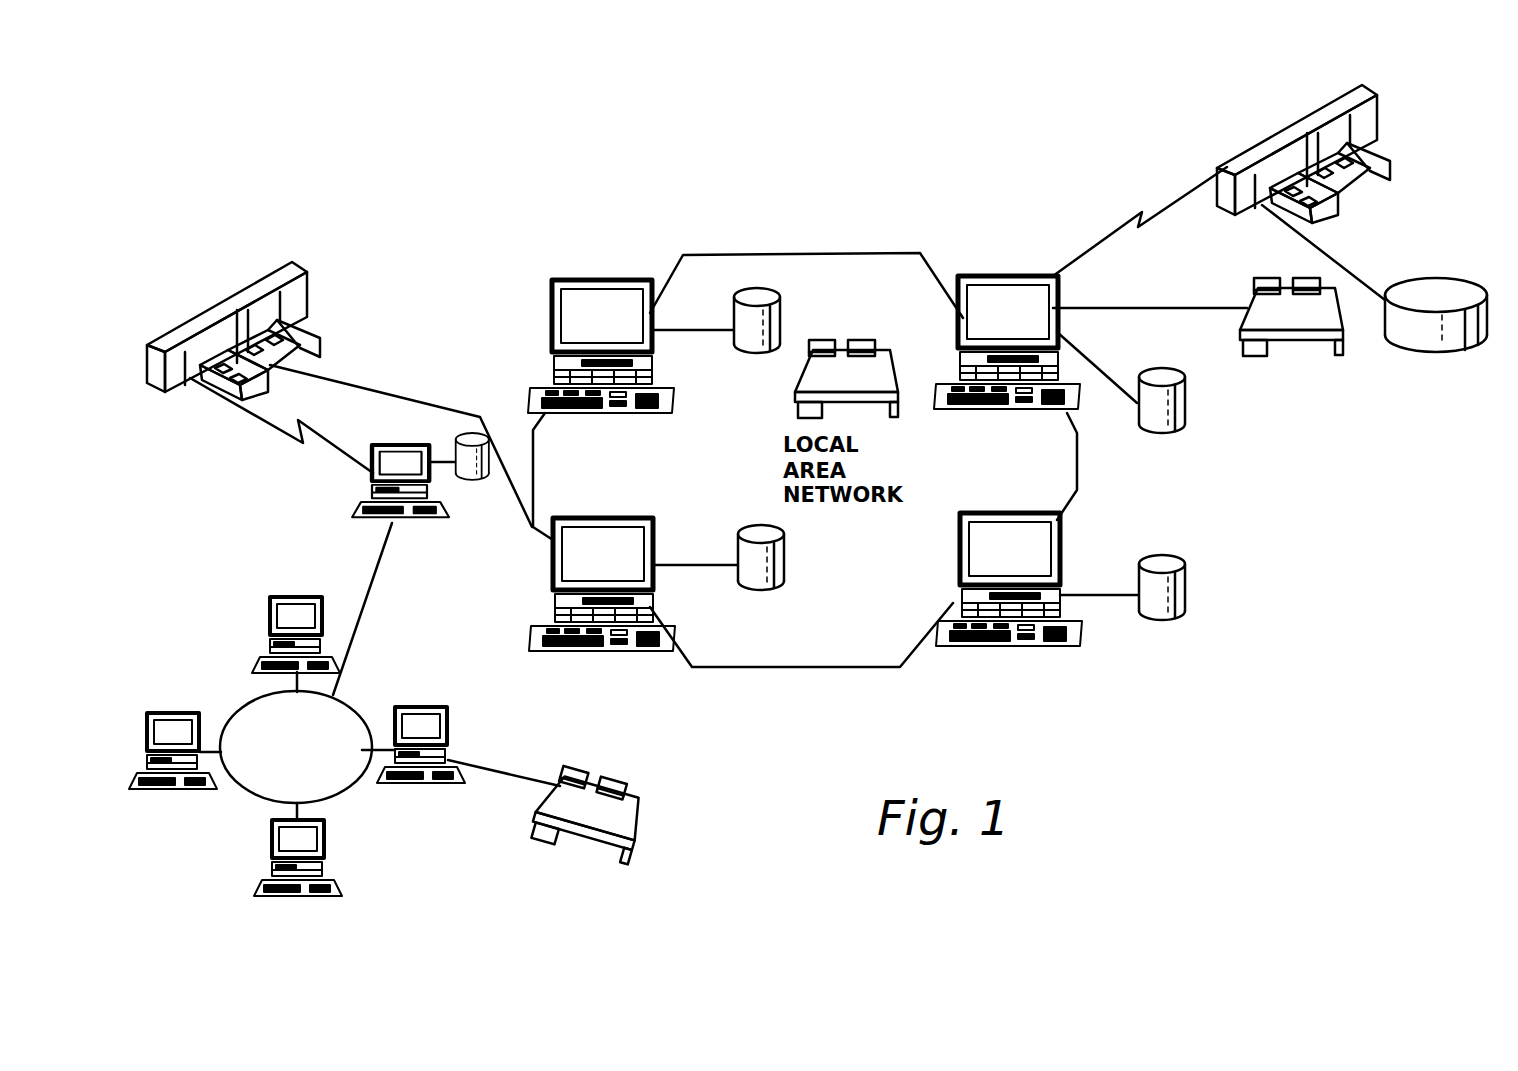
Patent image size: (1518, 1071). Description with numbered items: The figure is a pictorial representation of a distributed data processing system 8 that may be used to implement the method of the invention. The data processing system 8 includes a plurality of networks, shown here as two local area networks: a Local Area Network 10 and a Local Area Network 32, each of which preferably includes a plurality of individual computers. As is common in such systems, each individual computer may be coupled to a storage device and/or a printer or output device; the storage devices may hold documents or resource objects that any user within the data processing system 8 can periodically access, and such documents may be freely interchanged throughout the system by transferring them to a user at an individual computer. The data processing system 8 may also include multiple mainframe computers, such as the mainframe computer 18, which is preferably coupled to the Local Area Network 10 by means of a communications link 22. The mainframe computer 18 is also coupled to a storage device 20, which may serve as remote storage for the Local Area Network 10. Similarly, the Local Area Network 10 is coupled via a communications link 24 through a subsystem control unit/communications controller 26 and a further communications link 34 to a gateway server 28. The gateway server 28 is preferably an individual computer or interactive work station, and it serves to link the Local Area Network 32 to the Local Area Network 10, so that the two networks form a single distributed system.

The data processing system 8 is at (834, 210).
The Local Area Network 10 is at (831, 668).
The mainframe computer 18 is at (1298, 122).
The storage device 20 is at (1455, 290).
The communications link 22 is at (1175, 203).
The communications link 24 is at (405, 390).
The subsystem control unit/communications controller 26 is at (305, 270).
The gateway server 28 is at (400, 445).
The Local Area Network 32 is at (247, 793).
The communications link 34 is at (310, 450).